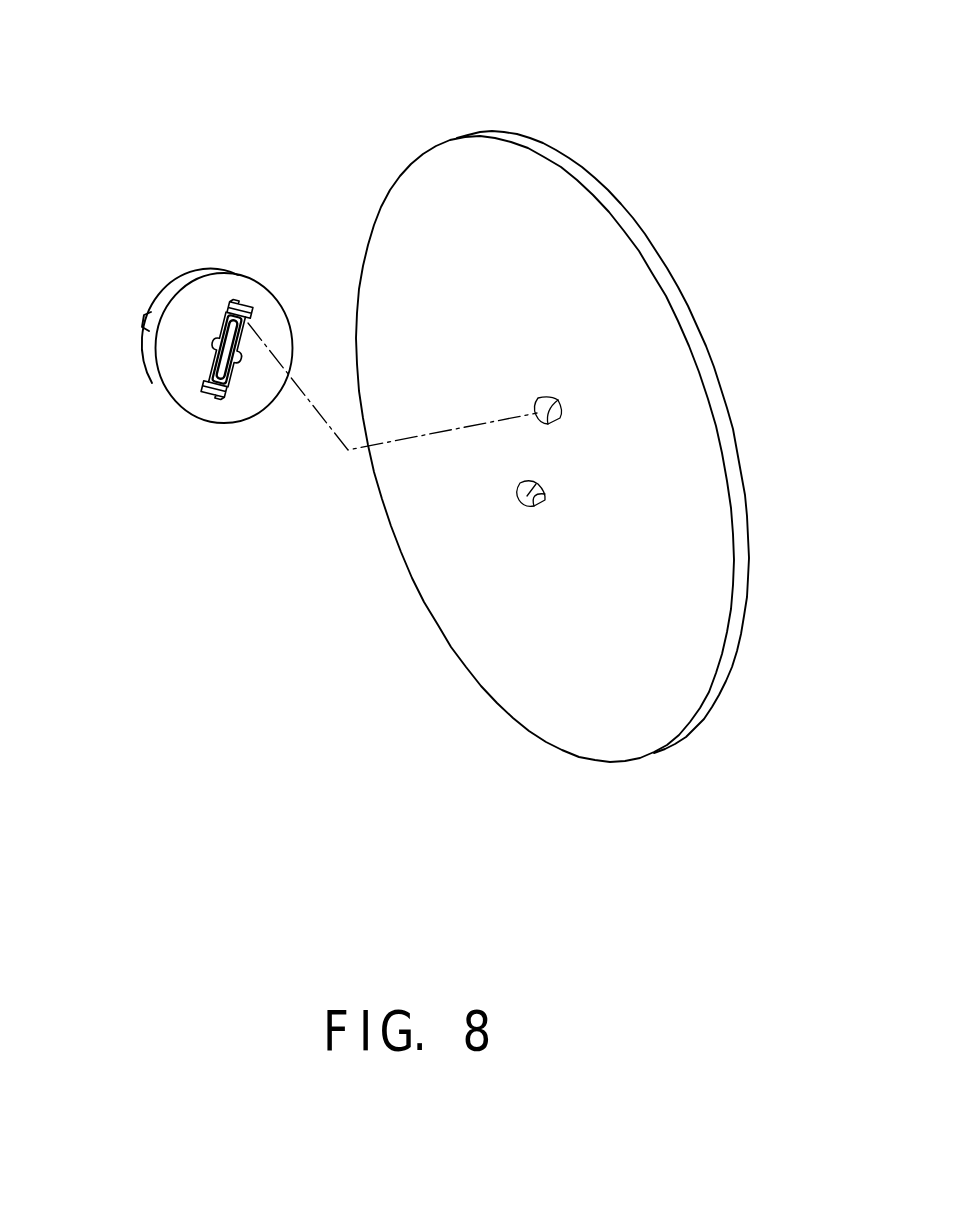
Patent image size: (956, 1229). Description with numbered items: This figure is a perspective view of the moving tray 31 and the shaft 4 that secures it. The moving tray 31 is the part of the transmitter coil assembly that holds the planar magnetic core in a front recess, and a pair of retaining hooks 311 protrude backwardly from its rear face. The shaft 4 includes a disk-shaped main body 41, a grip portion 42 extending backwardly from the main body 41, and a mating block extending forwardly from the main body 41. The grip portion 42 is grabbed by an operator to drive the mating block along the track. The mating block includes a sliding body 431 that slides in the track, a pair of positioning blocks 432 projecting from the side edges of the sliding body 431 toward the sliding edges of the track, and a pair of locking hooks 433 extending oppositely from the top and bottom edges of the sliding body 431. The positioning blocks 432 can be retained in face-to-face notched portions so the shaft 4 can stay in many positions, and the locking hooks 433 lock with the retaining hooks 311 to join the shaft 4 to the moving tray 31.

The moving tray 31 is at (453, 122).
The retaining hooks 311 is at (562, 403).
The shaft 4 is at (200, 260).
The main body 41 is at (175, 383).
The grip portion 42 is at (145, 327).
The sliding body 431 is at (248, 318).
The positioning blocks 432 is at (213, 343).
The locking hooks 433 is at (242, 302).